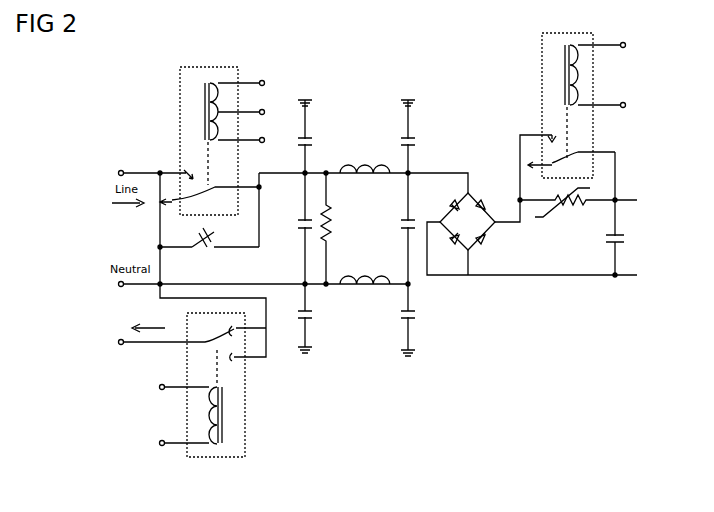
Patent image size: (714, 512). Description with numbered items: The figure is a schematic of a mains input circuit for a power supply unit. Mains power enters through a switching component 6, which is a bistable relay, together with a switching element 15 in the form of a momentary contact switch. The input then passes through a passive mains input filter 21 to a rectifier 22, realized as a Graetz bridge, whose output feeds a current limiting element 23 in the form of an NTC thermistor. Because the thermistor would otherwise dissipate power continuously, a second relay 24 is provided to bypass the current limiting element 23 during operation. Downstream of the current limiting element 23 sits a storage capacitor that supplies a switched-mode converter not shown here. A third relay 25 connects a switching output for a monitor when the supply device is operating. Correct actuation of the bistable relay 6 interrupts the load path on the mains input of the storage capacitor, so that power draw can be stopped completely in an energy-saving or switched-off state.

The switching component 6 is at (176, 63).
The switching element 15 is at (222, 259).
The passive mains input filter 21 is at (368, 125).
The rectifier 22 is at (482, 293).
The current limiting element 23 is at (588, 293).
The second relay 24 is at (519, 46).
The third relay 25 is at (266, 431).